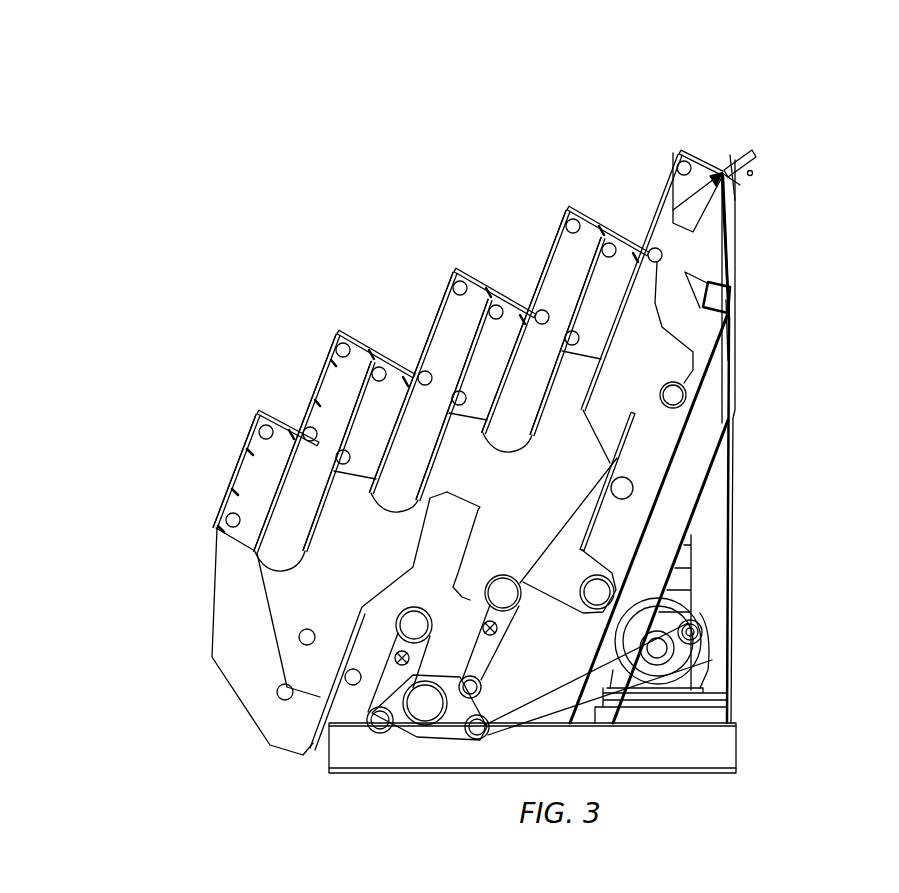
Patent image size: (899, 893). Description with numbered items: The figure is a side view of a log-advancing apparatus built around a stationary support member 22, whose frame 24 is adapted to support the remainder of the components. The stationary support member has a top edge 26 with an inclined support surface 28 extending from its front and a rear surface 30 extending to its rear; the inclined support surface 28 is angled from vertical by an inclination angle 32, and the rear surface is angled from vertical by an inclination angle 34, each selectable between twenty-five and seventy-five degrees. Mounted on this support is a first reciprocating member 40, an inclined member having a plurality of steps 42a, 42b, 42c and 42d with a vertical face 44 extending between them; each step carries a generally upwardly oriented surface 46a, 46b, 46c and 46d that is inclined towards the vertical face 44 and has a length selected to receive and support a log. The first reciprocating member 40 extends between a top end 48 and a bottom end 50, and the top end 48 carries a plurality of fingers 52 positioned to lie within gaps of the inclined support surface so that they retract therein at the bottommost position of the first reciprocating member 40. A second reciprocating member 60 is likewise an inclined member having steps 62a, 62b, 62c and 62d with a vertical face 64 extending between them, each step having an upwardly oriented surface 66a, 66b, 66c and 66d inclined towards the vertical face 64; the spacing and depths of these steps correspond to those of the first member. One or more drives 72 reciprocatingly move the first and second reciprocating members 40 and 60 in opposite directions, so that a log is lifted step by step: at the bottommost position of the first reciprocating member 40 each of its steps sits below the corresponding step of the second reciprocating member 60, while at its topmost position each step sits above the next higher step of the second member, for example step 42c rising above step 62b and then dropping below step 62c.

The stationary support member 22 is at (727, 243).
The frame 24 is at (733, 472).
The top edge 26 is at (716, 165).
The inclined support surface 28 is at (668, 210).
The rear surface 30 is at (734, 157).
The inclination angle 32 is at (675, 153).
The inclination angle 34 is at (727, 162).
The first reciprocating member 40 is at (727, 333).
The step 42a is at (619, 365).
The step 42b is at (541, 412).
The step 42c is at (431, 464).
The step 42d is at (315, 518).
The vertical face 44 is at (598, 232).
The upwardly oriented surface 46a is at (681, 152).
The upwardly oriented surface 46b is at (560, 268).
The upwardly oriented surface 46c is at (455, 268).
The upwardly oriented surface 46d is at (343, 327).
The top end 48 is at (724, 175).
The bottom end 50 is at (730, 272).
The fingers 52 is at (750, 174).
The second reciprocating member 60 is at (230, 600).
The step 62a is at (592, 394).
The step 62b is at (480, 449).
The step 62c is at (370, 505).
The step 62d is at (255, 559).
The vertical face 64 is at (546, 277).
The upwardly oriented surface 66a is at (636, 255).
The upwardly oriented surface 66b is at (518, 314).
The upwardly oriented surface 66c is at (402, 375).
The upwardly oriented surface 66d is at (288, 428).
The drive 72 is at (712, 593).